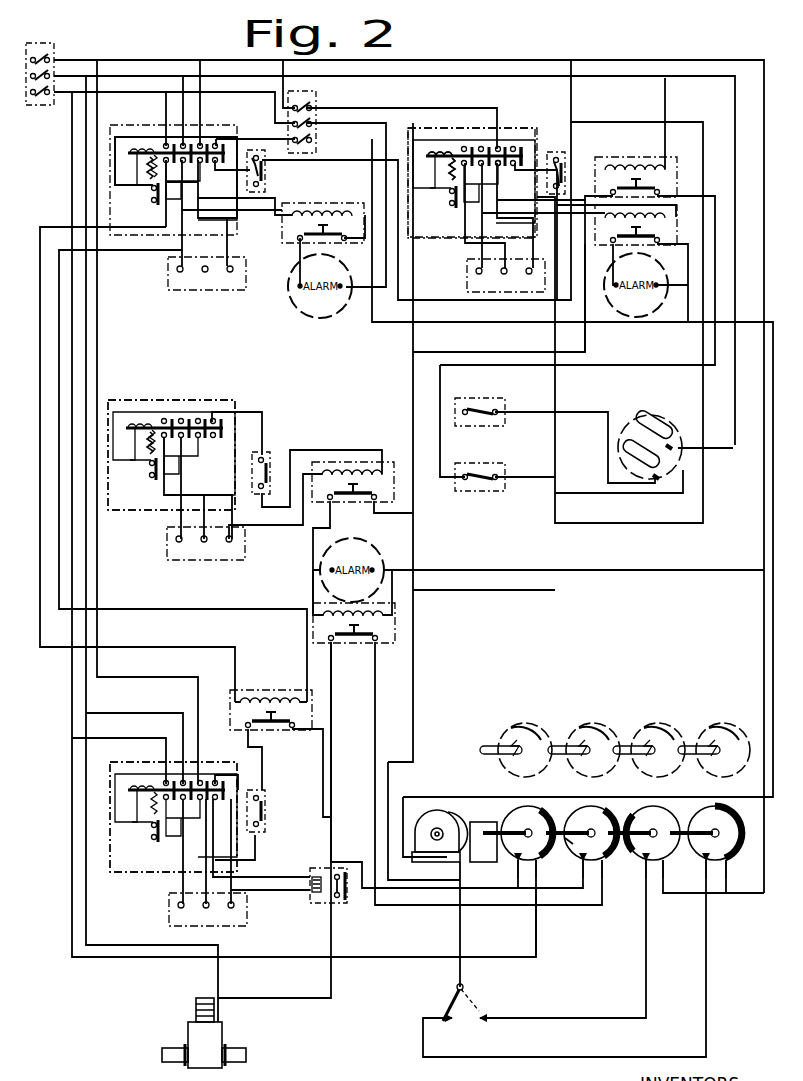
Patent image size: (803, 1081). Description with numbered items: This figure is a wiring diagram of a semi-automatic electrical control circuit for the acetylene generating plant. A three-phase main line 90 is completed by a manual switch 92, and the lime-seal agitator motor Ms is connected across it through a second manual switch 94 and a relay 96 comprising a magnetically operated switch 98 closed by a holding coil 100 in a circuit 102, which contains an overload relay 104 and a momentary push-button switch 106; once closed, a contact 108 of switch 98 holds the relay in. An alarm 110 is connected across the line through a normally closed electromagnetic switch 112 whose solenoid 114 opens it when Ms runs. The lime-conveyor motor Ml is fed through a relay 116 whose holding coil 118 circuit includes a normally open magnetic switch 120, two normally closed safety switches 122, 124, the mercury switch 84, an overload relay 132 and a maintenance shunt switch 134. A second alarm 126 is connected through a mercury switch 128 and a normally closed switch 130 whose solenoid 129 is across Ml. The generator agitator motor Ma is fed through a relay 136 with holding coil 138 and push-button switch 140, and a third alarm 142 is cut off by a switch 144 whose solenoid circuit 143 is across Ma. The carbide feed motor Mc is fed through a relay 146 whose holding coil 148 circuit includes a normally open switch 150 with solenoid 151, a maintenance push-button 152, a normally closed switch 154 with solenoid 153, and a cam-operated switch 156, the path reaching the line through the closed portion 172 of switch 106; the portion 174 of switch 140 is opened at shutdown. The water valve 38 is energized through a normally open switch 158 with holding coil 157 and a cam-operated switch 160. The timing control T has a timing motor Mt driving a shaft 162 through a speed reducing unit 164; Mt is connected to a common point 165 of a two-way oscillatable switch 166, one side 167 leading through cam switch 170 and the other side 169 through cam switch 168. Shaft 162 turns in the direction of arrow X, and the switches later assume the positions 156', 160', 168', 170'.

The water valve 38 is at (213, 1039).
The mercury switch 84 is at (640, 453).
The three-phase main line 90 is at (116, 78).
The manually operable switch 92 is at (50, 51).
The manually operable switch 94 is at (310, 110).
The relay 96 is at (425, 236).
The magnetically operated switch 98 is at (470, 142).
The holding coil 100 is at (433, 152).
The circuit 102 is at (500, 168).
The overload relay 104 is at (451, 190).
The momentary contact push-button switch 106 is at (556, 158).
The contact 108 is at (521, 144).
The alarm 110 is at (637, 318).
The normally closed electromagnetic switch 112 is at (652, 237).
The solenoid 114 is at (670, 218).
The relay 116 is at (148, 511).
The holding coil 118 is at (145, 428).
The normally open magnetically operated switch 120 is at (658, 191).
The manually operable normally closed switch 122 is at (488, 409).
The manually operable normally closed switch 124 is at (486, 474).
The second alarm 126 is at (381, 557).
The mercury switch 128 is at (645, 418).
The solenoid 129 is at (345, 470).
The normally closed magnetically operated switch 130 is at (349, 498).
The overload relay 132 is at (156, 475).
The manually operable switch 134 is at (262, 454).
The relay 136 is at (148, 127).
The holding coil 138 is at (153, 182).
The push-button switch 140 is at (250, 152).
The third alarm 142 is at (305, 313).
The solenoid circuit 143 is at (328, 212).
The normally closed magnetically operated switch 144 is at (298, 233).
The relay 146 is at (140, 763).
The holding coil 148 is at (142, 790).
The normally open magnetic switch 150 is at (271, 728).
The solenoid 151 is at (280, 701).
The momentary push-button switch 152 is at (262, 801).
The solenoid 153 is at (320, 607).
The normally closed magnetic switch 154 is at (358, 636).
The cam-operated switch 156 is at (582, 837).
The holding coil 157 is at (310, 903).
The normally open magnetic switch 158 is at (340, 898).
The cam-operated switch 160 is at (516, 838).
The shaft 162 is at (575, 841).
The speed reducing unit 164 is at (488, 862).
The common point 165 is at (466, 988).
The two-way oscillatable switch 166 is at (458, 1005).
The one side of two-way switch 167 is at (441, 1017).
The cam-operated switch 168 is at (644, 837).
The other side of two-way switch 169 is at (478, 1019).
The cam-operated switch 170 is at (706, 837).
The closed portion of switch 106 172 is at (560, 185).
The portion of push-button switch 140 174 is at (262, 186).
The switch 160 in second position 160' is at (527, 735).
The switch 156 in second position 156' is at (585, 734).
The switch 168 in second position 168' is at (649, 734).
The switch 170 in second position 170' is at (714, 734).
The generator agitator motor Ma is at (190, 291).
The lime-seal agitator motor Ms is at (468, 278).
The lime-conveyor motor Ml is at (200, 556).
The carbide feed motor Mc is at (203, 918).
The timing motor Mt is at (425, 858).
The timing control T is at (455, 806).
The arrow X is at (742, 880).